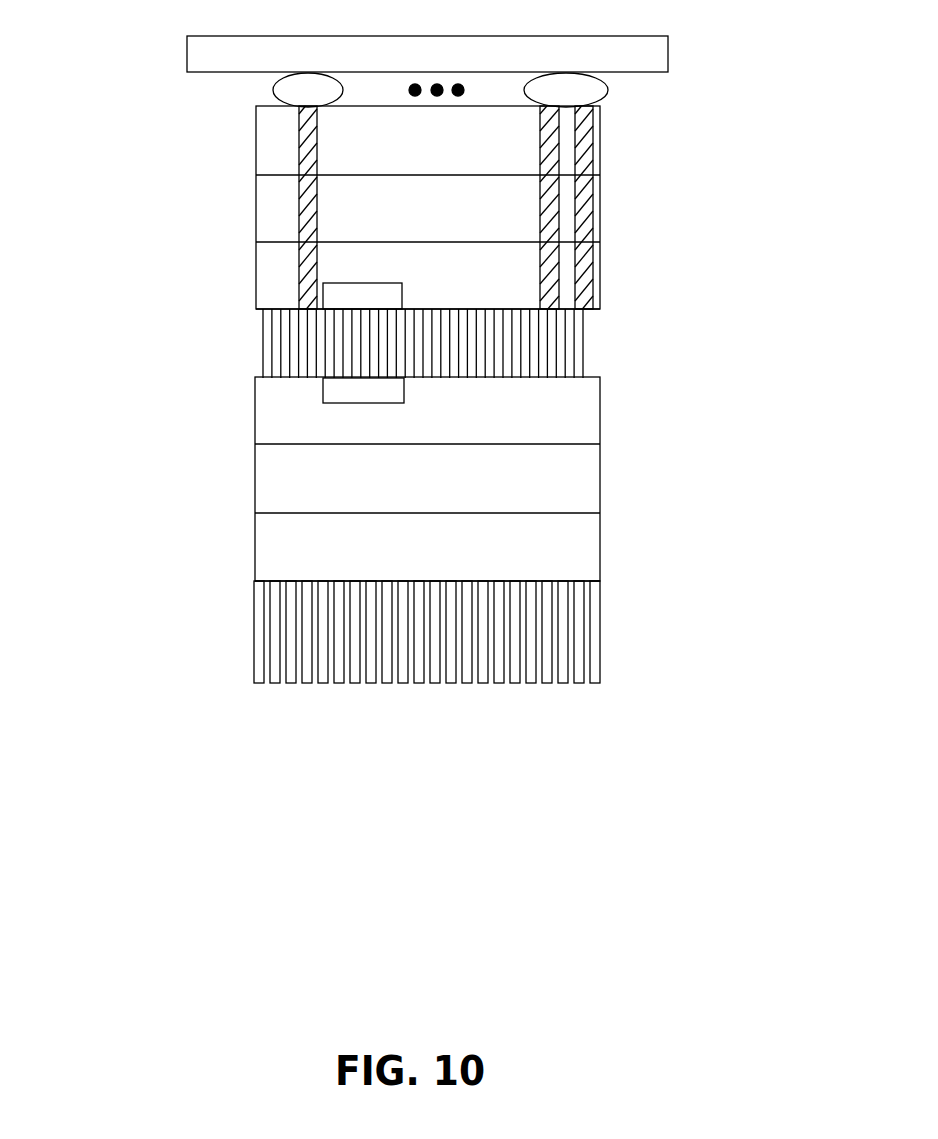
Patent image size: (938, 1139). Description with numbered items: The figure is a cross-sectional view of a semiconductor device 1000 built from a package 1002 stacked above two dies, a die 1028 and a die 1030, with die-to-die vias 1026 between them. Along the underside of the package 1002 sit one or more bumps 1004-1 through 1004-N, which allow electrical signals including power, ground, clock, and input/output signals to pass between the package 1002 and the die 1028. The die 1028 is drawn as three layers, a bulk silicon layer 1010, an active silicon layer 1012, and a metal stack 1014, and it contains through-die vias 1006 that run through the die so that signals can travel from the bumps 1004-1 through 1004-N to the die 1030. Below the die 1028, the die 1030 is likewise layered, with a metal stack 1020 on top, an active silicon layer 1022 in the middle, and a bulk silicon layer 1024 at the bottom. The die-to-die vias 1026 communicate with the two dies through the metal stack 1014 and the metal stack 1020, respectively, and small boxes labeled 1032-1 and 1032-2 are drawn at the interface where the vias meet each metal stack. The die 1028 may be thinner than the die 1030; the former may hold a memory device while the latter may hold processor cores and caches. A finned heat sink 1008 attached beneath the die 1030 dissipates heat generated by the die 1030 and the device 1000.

The semiconductor device 1000 is at (313, 790).
The package 1002 is at (500, 65).
The bump 1004-1 is at (272, 90).
The bump 1004-N is at (610, 90).
The through-die via 1006 is at (720, 178).
The heat sink 1008 is at (239, 628).
The bulk silicon layer 1010 is at (488, 155).
The active silicon layer 1012 is at (505, 221).
The metal stack 1014 is at (475, 300).
The metal stack 1020 is at (533, 435).
The active silicon layer 1022 is at (500, 488).
The bulk silicon layer 1024 is at (495, 560).
The die-to-die via 1026 is at (589, 345).
The die 1028 is at (243, 106).
The die 1030 is at (242, 377).
The interconnect pad 1032-1 is at (390, 305).
The interconnect pad 1032-2 is at (390, 399).